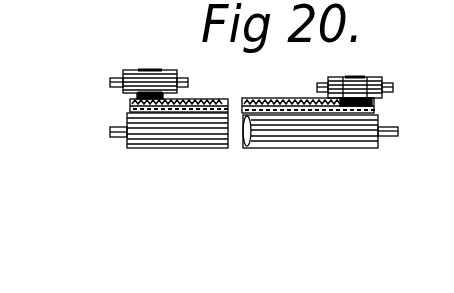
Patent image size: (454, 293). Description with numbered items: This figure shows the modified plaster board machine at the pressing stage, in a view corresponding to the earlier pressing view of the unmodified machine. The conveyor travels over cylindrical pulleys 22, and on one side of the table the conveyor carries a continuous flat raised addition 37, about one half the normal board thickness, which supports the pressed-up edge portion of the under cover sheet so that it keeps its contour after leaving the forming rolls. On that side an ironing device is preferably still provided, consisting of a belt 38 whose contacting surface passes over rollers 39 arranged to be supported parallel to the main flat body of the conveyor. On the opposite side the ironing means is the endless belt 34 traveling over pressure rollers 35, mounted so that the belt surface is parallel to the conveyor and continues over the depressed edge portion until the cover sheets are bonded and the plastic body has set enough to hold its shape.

The pulleys 22 is at (160, 136).
The endless belt 34 is at (360, 68).
The pressure rollers 35 is at (386, 90).
The raised conveyor addition 37 is at (131, 109).
The belt 38 is at (152, 59).
The rollers 39 is at (121, 93).